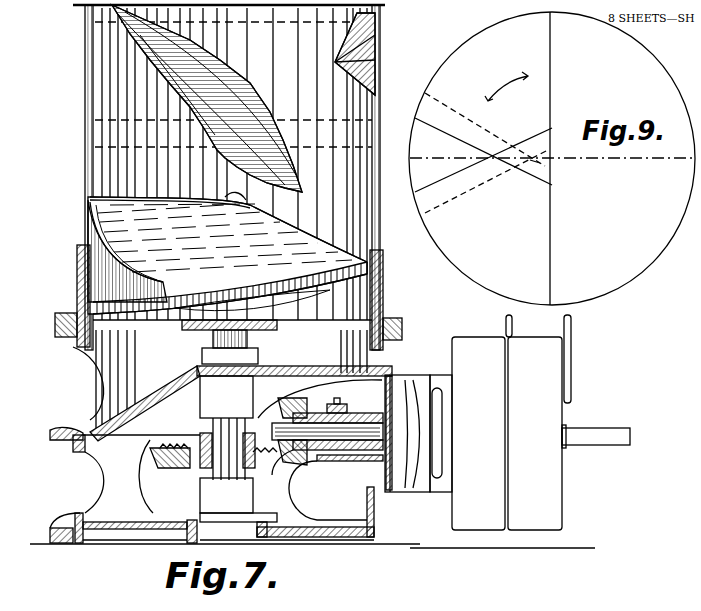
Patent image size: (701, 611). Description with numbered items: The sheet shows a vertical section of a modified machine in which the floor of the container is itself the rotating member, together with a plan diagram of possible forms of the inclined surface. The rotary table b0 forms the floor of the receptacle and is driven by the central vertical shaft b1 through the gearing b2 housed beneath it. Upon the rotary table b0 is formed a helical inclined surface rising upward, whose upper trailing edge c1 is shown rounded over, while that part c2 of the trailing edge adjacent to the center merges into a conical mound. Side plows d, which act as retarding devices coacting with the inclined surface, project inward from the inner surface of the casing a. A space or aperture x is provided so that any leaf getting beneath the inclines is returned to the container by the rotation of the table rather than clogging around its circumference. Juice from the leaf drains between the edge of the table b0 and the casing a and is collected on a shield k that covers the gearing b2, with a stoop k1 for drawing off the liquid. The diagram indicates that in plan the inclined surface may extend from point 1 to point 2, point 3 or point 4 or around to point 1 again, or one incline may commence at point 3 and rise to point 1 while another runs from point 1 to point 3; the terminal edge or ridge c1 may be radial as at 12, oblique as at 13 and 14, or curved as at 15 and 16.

In FIG. 7, the casing a is at (85, 170).
In FIG. 7, the side plows d is at (228, 85).
In FIG. 7, the upper trailing edge c1 is at (179, 189).
In FIG. 9, the upper trailing edge c1 is at (541, 166).
In FIG. 7, the trailing edge part c2 is at (228, 190).
In FIG. 7, the aperture x is at (78, 274).
In FIG. 7, the rotary table b0 is at (307, 325).
In FIG. 7, the central vertical shaft b1 is at (213, 426).
In FIG. 7, the shield k is at (287, 384).
In FIG. 7, the stoop k1 is at (167, 400).
In FIG. 7, the gearing b2 is at (277, 470).
In FIG. 9, the starting point of inclined surface 1 is at (483, 151).
In FIG. 9, the extent point of inclined surface 2 is at (521, 79).
In FIG. 9, the extent point of inclined surface 3 is at (540, 160).
In FIG. 9, the extent point of inclined surface 4 is at (548, 255).
In FIG. 9, the radial terminal edge 12 is at (399, 157).
In FIG. 9, the oblique terminal edge 13 is at (466, 129).
In FIG. 9, the oblique terminal edge 14 is at (468, 181).
In FIG. 9, the curved terminal edge 15 is at (500, 128).
In FIG. 9, the curved terminal edge 16 is at (476, 178).